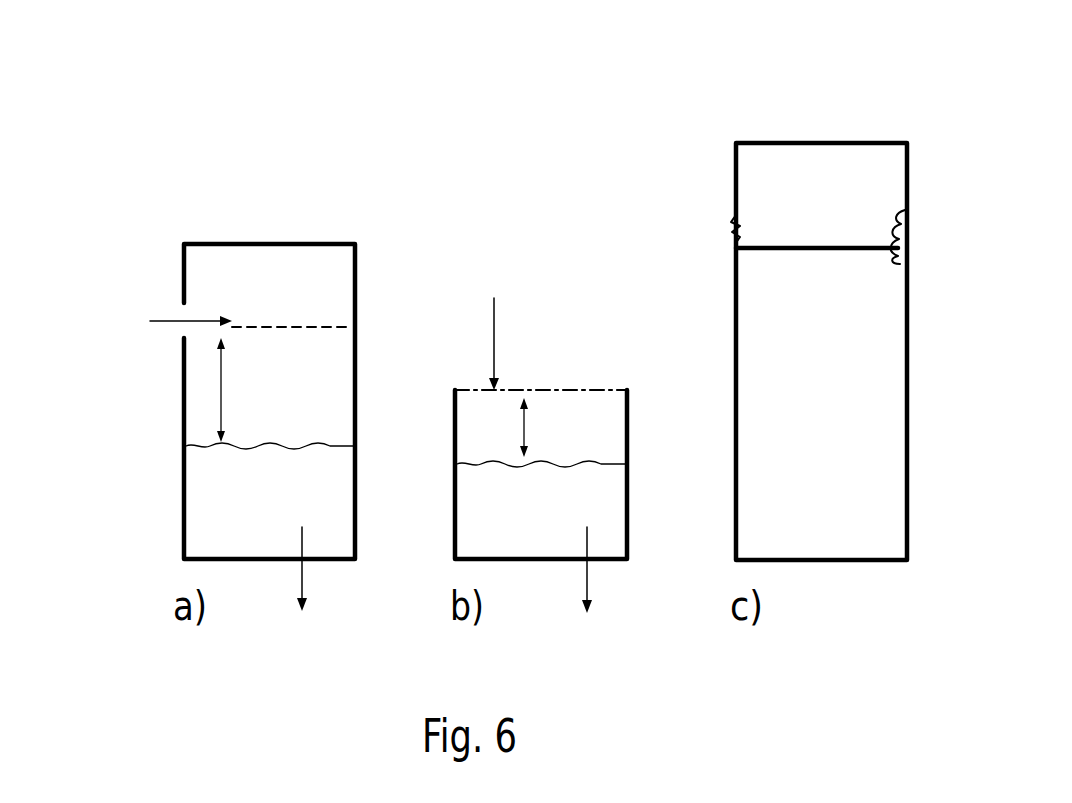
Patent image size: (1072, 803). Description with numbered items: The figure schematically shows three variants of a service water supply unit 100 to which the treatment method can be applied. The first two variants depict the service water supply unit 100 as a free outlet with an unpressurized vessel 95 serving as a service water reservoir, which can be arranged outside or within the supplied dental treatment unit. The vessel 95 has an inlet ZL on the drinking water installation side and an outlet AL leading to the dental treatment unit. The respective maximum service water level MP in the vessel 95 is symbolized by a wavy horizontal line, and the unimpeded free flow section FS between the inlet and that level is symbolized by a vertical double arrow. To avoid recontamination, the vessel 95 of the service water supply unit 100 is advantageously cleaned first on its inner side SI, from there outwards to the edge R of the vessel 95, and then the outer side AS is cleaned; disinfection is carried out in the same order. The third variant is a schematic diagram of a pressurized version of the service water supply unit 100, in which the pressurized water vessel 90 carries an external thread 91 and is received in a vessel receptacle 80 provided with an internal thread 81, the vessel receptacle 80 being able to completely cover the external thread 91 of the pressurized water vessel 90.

The service water supply unit 100 is at (221, 188).
The vessel 95 is at (184, 415).
The vessel receptacle 80 is at (888, 203).
The internal thread 81 is at (906, 212).
The pressurized water vessel 90 is at (888, 398).
The external thread 91 is at (900, 263).
The inlet ZL is at (150, 321).
The outlet AL is at (305, 589).
The free flow section FS is at (223, 386).
The maximum service water level MP is at (330, 445).
The inner side SI is at (300, 260).
The edge R is at (173, 303).
The outer side AS is at (163, 463).